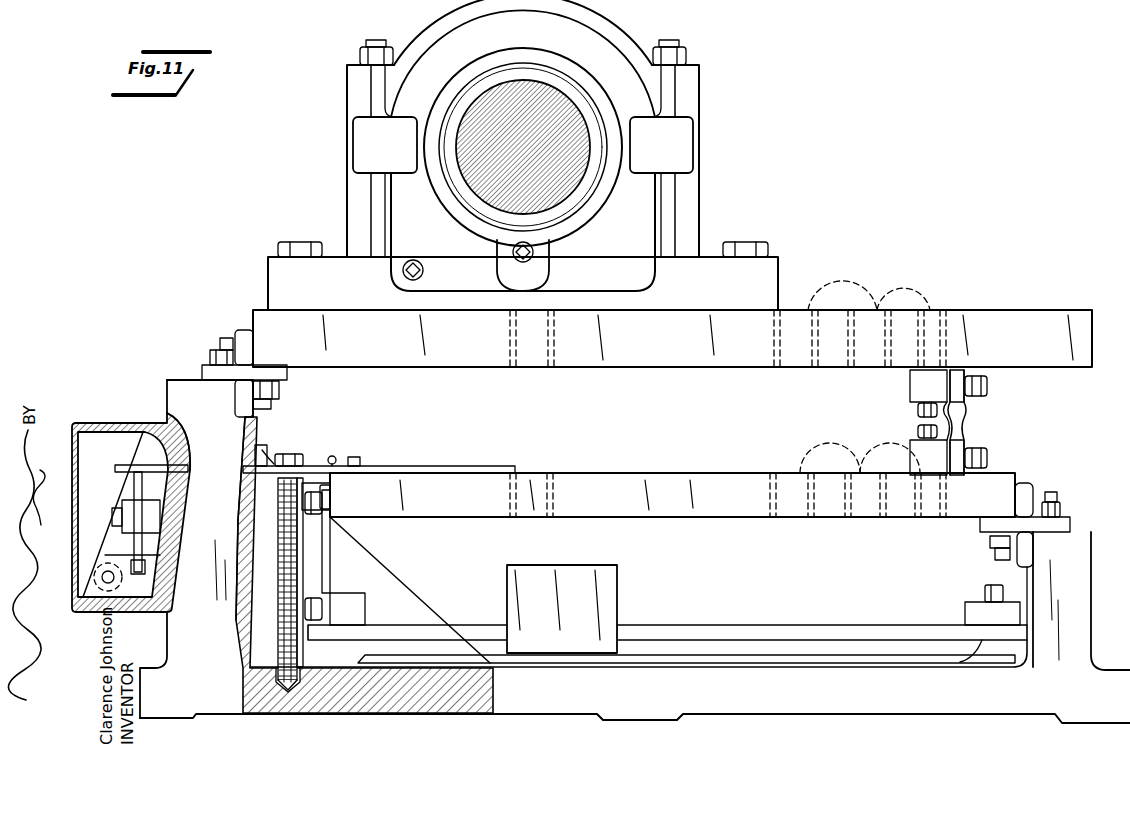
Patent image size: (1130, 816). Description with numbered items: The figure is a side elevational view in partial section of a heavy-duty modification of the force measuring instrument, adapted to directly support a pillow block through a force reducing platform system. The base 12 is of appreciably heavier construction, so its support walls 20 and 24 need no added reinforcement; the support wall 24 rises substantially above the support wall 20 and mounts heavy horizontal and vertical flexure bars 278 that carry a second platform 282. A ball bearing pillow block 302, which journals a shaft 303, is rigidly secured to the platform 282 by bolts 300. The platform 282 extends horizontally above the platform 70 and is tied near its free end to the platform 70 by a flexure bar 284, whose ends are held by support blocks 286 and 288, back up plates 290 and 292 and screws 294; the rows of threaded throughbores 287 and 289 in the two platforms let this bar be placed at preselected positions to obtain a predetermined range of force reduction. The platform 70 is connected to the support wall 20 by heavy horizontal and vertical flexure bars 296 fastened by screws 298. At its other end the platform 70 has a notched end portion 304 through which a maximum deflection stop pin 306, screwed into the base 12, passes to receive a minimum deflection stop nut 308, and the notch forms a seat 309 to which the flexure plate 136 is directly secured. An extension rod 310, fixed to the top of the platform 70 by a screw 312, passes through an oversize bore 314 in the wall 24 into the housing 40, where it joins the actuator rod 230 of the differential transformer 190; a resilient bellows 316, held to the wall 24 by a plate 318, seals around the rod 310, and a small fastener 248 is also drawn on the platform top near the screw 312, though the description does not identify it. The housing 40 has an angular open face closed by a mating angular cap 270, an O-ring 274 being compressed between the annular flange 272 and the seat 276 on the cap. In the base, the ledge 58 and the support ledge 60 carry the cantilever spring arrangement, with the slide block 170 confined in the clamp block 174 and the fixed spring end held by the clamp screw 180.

The base 12 is at (780, 700).
The support wall 20 is at (1093, 571).
The support wall 24 is at (213, 616).
The housing 40 is at (78, 418).
The ledge 58 is at (738, 642).
The support ledge 60 is at (971, 659).
The platform 70 is at (720, 482).
The flexure plate 136 is at (330, 561).
The slide block 170 is at (615, 644).
The clamp block 174 is at (510, 582).
The clamp screw 180 is at (993, 586).
The differential transformer 190 is at (132, 504).
The actuator rod 230 is at (130, 487).
The pin 248 is at (332, 456).
The cap 270 is at (125, 423).
The flange 272 is at (115, 590).
The O-ring 274 is at (142, 432).
The seat 276 is at (176, 435).
The flexure bars 278 is at (245, 344).
The second platform 282 is at (975, 311).
The flexure bar 284 is at (966, 421).
The support block 286 is at (916, 384).
The threaded throughbores 287 is at (869, 295).
The support block 288 is at (915, 456).
The threaded throughbores 289 is at (860, 458).
The back up plate 290 is at (968, 395).
The back up plate 292 is at (968, 440).
The screws 294 is at (988, 385).
The flexure bars 296 is at (1026, 492).
The screws 298 is at (1048, 501).
The bolts 300 is at (304, 240).
The ball bearing pillow block 302 is at (334, 194).
The shaft 303 is at (530, 83).
The notched end portion 304 is at (317, 483).
The maximum deflection stop pin 306 is at (282, 577).
The minimum deflection stop nut 308 is at (296, 449).
The seat 309 is at (330, 501).
The extension rod 310 is at (358, 468).
The screw 312 is at (355, 457).
The oversize bore 314 is at (187, 470).
The resilient bellows 316 is at (268, 448).
The plate 318 is at (230, 518).